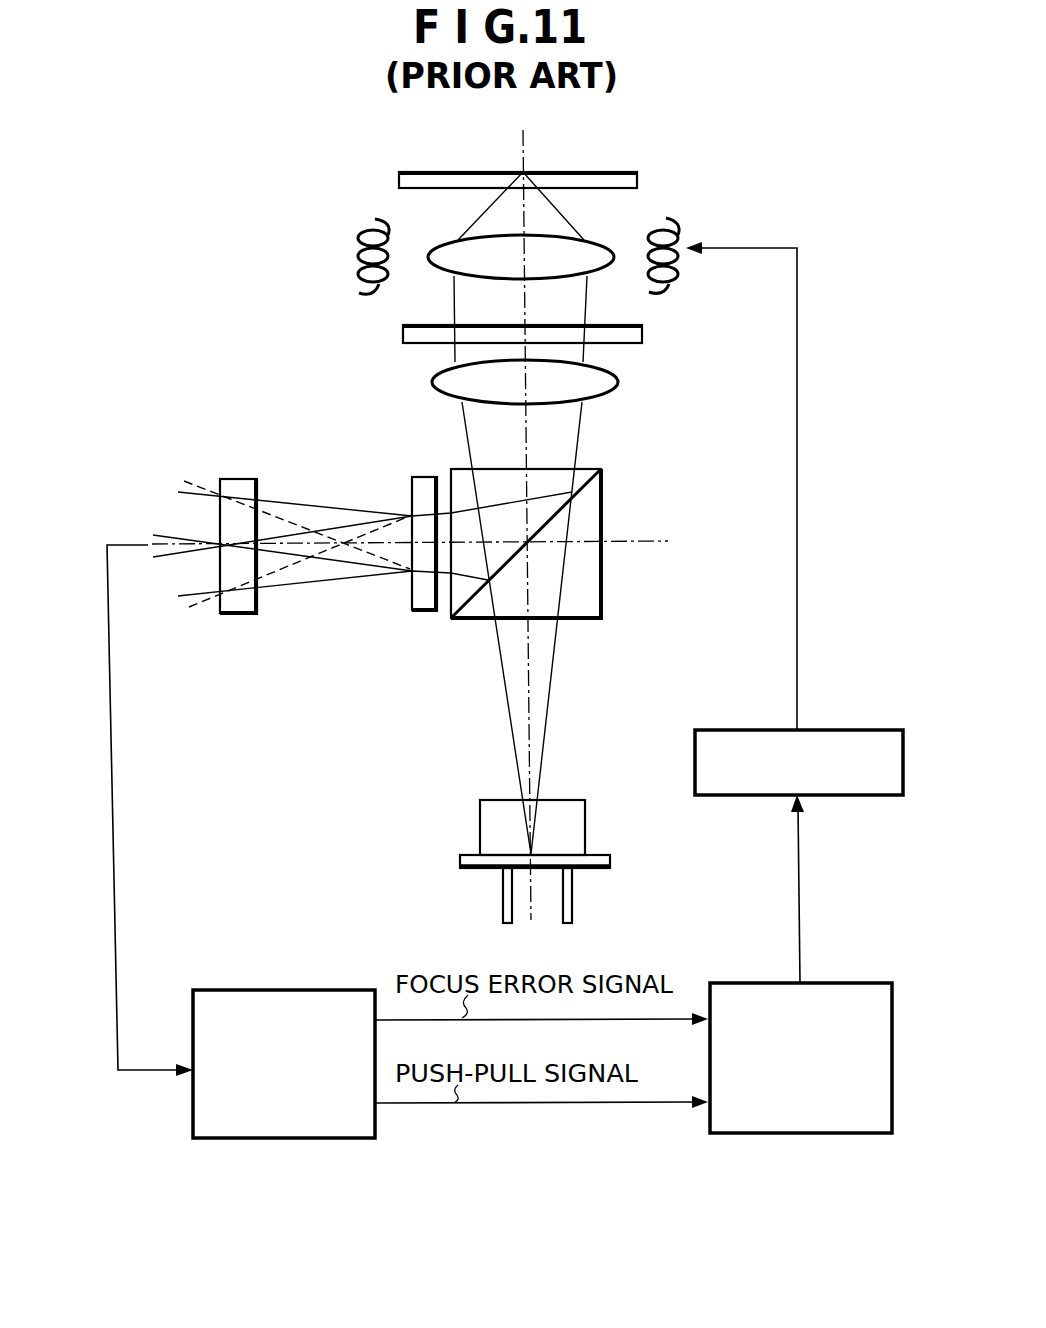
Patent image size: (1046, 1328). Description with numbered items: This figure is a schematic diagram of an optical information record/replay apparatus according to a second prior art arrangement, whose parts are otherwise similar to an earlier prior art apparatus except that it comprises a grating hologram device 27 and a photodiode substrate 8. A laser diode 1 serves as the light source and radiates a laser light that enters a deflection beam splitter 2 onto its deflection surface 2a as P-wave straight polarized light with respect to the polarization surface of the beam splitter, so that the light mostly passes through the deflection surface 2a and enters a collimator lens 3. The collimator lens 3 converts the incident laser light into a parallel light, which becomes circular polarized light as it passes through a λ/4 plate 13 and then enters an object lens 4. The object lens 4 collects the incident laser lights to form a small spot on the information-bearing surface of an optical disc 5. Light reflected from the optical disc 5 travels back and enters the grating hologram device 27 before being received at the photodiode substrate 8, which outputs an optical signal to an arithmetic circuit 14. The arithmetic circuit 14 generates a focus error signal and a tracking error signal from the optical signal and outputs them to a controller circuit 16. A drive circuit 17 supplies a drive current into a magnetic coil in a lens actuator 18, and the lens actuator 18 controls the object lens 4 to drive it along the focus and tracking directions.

The laser diode 1 is at (585, 828).
The deflection beam splitter 2 is at (601, 594).
The deflection surface 2a is at (553, 519).
The collimator lens 3 is at (618, 382).
The object lens 4 is at (447, 248).
The optical disc 5 is at (618, 172).
The photodiode substrate 8 is at (246, 486).
The λ/4 plate 13 is at (642, 328).
The arithmetic circuit 14 is at (320, 1140).
The controller circuit 16 is at (770, 1136).
The drive circuit 17 is at (859, 730).
The lens actuator 18 is at (680, 226).
The grating hologram device 27 is at (422, 486).